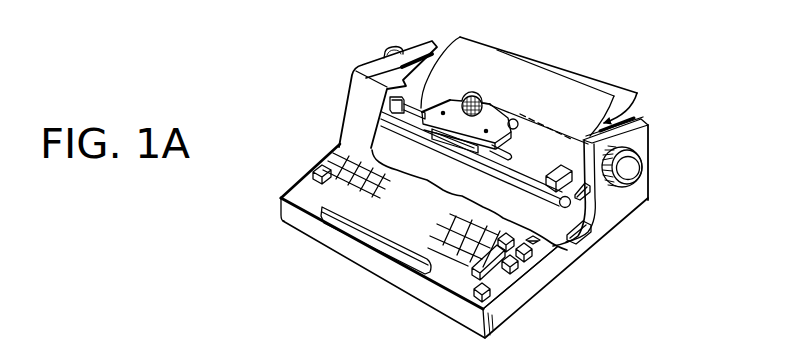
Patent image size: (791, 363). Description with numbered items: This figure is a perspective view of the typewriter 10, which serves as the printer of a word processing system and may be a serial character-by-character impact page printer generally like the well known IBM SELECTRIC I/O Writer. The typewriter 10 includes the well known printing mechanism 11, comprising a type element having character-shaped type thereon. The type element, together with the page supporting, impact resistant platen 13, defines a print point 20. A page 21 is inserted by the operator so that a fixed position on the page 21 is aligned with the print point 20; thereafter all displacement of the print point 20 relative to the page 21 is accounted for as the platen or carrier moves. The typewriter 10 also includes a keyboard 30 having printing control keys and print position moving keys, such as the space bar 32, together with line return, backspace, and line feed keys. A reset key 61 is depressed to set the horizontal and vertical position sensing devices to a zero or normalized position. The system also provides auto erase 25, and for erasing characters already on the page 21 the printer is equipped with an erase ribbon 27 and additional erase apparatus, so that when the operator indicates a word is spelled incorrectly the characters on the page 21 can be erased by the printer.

The typewriter 10 is at (660, 136).
The printing mechanism 11 is at (473, 97).
The platen 13 is at (478, 92).
The print point 20 is at (483, 103).
The page 21 is at (577, 84).
The auto erase 25 is at (524, 113).
The erase ribbon 27 is at (513, 119).
The keyboard 30 is at (343, 152).
The space bar 32 is at (378, 248).
The reset key 61 is at (534, 264).